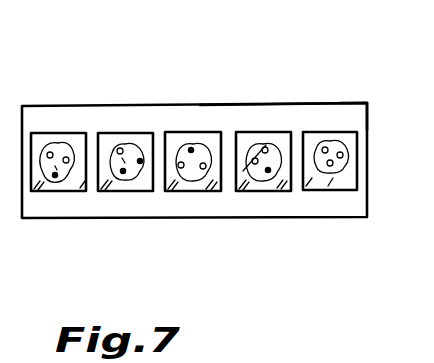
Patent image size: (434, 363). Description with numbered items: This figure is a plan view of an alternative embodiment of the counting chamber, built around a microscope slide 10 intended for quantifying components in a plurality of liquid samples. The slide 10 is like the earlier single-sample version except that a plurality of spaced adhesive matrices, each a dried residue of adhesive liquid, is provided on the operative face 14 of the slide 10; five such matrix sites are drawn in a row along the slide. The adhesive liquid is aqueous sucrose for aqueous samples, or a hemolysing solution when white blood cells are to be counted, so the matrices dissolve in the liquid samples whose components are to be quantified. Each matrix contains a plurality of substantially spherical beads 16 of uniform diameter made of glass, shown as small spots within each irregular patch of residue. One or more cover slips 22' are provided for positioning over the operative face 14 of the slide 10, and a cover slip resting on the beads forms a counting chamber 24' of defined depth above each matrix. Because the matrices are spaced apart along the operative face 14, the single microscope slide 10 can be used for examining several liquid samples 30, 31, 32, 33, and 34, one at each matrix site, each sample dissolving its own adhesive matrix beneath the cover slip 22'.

The microscope slide 10 is at (367, 162).
The operative face 14 is at (303, 105).
The spherical beads 16 is at (125, 146).
The cover slip 22' is at (58, 113).
The counting chamber 24' is at (373, 74).
The liquid sample 30 is at (60, 180).
The liquid sample 31 is at (137, 183).
The liquid sample 32 is at (197, 183).
The liquid sample 33 is at (262, 183).
The liquid sample 34 is at (326, 172).